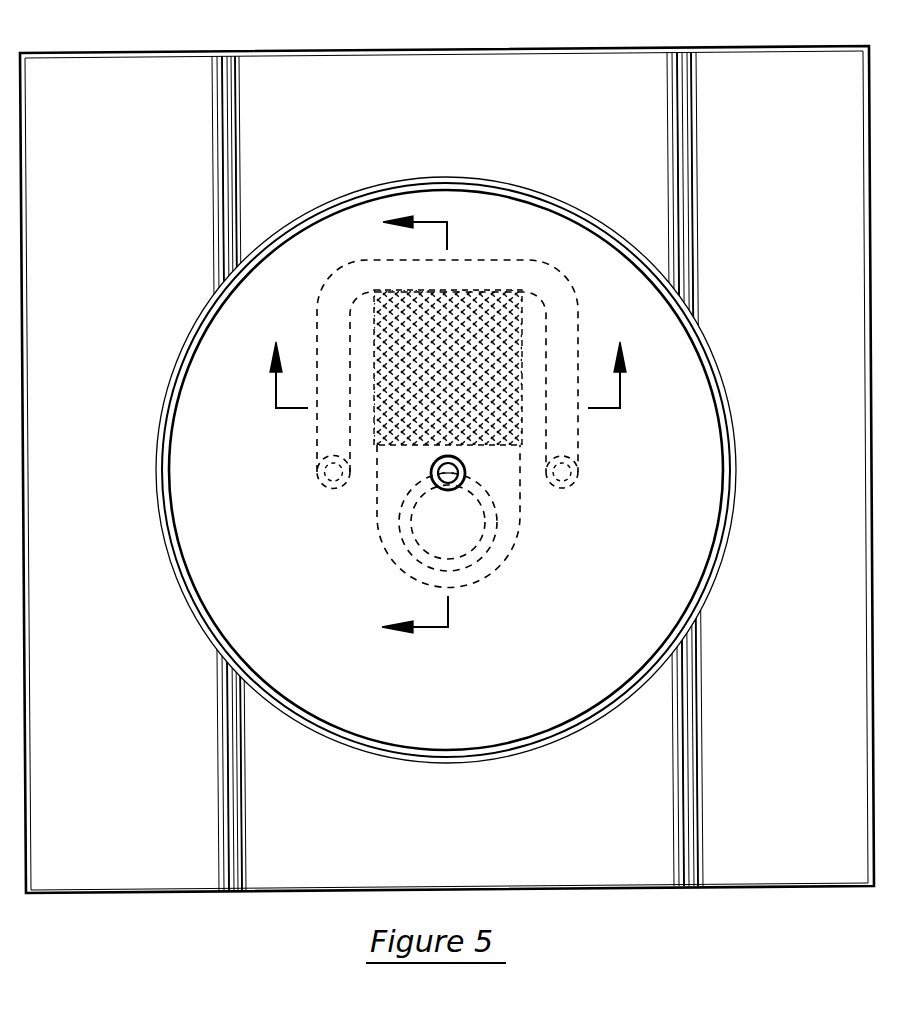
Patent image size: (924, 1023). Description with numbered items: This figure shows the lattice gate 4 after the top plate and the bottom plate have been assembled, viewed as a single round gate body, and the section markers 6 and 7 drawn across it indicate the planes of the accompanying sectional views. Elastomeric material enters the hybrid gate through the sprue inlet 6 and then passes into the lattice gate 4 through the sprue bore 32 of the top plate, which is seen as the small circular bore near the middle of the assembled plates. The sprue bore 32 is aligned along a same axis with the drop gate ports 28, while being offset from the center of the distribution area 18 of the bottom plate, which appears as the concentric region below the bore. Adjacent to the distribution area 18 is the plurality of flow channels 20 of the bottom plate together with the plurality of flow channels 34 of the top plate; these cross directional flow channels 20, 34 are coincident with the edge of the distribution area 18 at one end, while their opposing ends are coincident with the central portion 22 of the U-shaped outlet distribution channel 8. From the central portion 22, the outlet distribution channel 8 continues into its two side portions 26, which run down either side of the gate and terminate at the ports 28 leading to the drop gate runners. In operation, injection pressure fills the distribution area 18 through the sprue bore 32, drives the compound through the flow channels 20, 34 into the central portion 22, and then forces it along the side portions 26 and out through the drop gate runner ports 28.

The lattice gate 4 is at (403, 128).
The sprue inlet 6 is at (448, 357).
The section line 7- 7 is at (405, 425).
The outlet distribution channel 8 is at (555, 302).
The distribution area 18 is at (461, 540).
The flow channels 20 is at (382, 399).
The central portion 22 is at (476, 277).
The side portions 26 is at (567, 415).
The ports 28 is at (330, 485).
The sprue bore 32 is at (437, 484).
The flow channels 34 is at (408, 404).